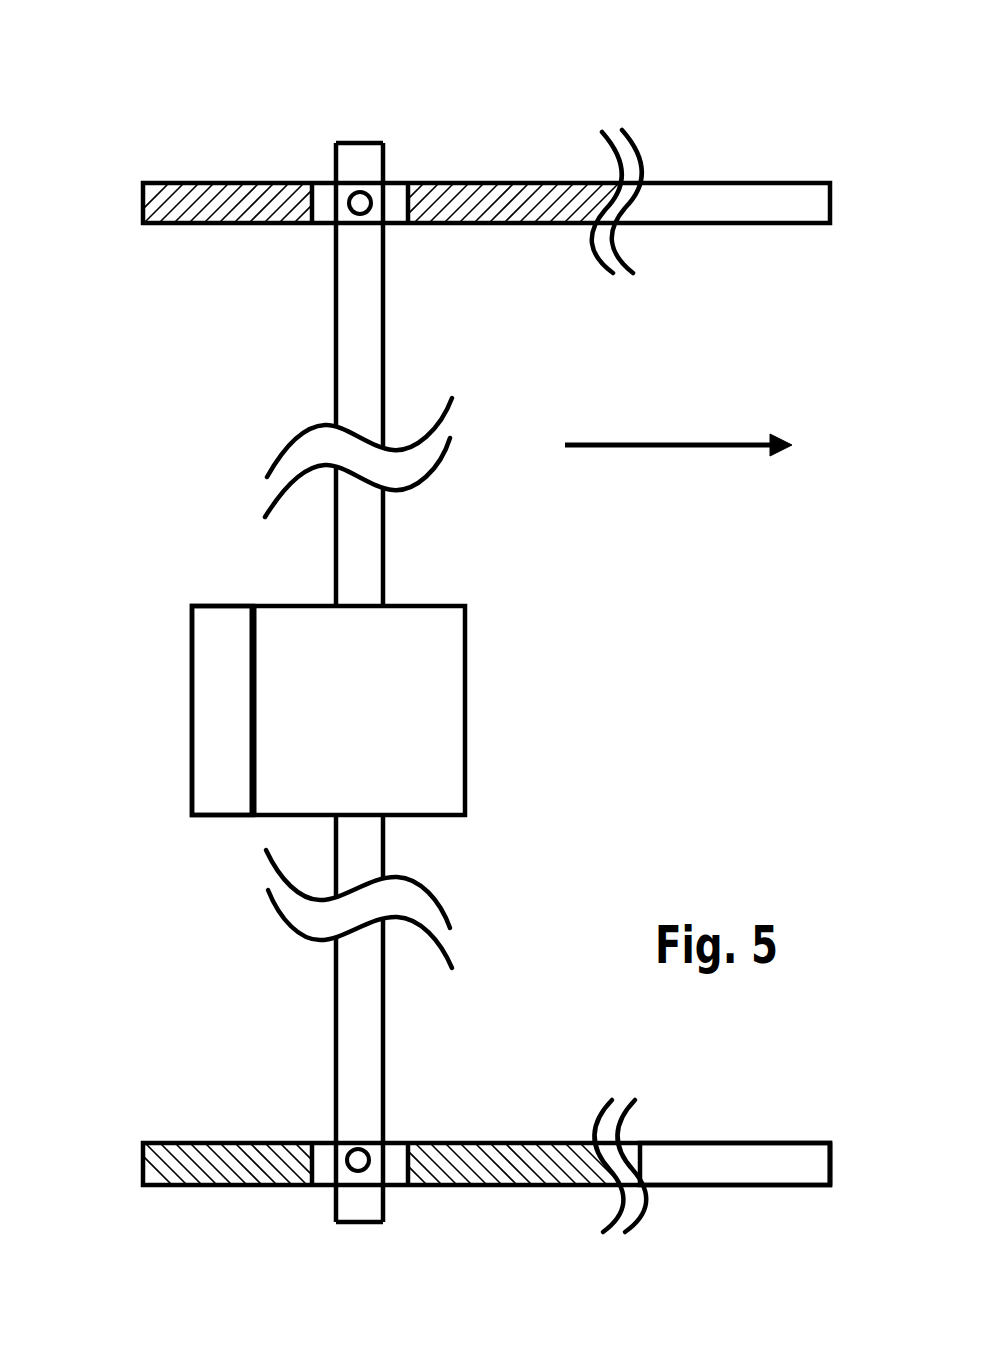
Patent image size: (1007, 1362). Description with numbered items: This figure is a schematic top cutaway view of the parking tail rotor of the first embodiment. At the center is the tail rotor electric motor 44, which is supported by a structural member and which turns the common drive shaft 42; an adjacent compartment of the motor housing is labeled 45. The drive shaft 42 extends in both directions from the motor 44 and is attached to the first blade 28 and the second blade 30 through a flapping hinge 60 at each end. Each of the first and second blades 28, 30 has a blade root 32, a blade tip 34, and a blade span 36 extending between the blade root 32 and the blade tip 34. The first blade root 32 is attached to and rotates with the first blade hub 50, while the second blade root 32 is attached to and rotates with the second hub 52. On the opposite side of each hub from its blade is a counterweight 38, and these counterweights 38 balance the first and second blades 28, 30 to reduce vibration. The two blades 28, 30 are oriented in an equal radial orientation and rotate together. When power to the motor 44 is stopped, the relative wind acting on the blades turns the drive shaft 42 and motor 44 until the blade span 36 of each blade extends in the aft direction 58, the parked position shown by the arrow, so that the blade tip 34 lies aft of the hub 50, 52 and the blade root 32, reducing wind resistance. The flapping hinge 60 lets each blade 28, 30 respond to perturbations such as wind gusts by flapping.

The first blade 28 is at (733, 1163).
The second blade 30 is at (728, 183).
The blade root 32 is at (440, 1142).
The blade tip 34 is at (828, 1168).
The blade span 36 is at (668, 1142).
The counterweight 38 is at (187, 182).
The common drive shaft 42 is at (453, 182).
The tail rotor electric motor 44 is at (407, 727).
The housing compartment 45 is at (217, 668).
The first blade hub 50 is at (352, 1173).
The second hub 52 is at (347, 182).
The aft direction 58 is at (625, 442).
The flapping hinge 60 is at (363, 190).